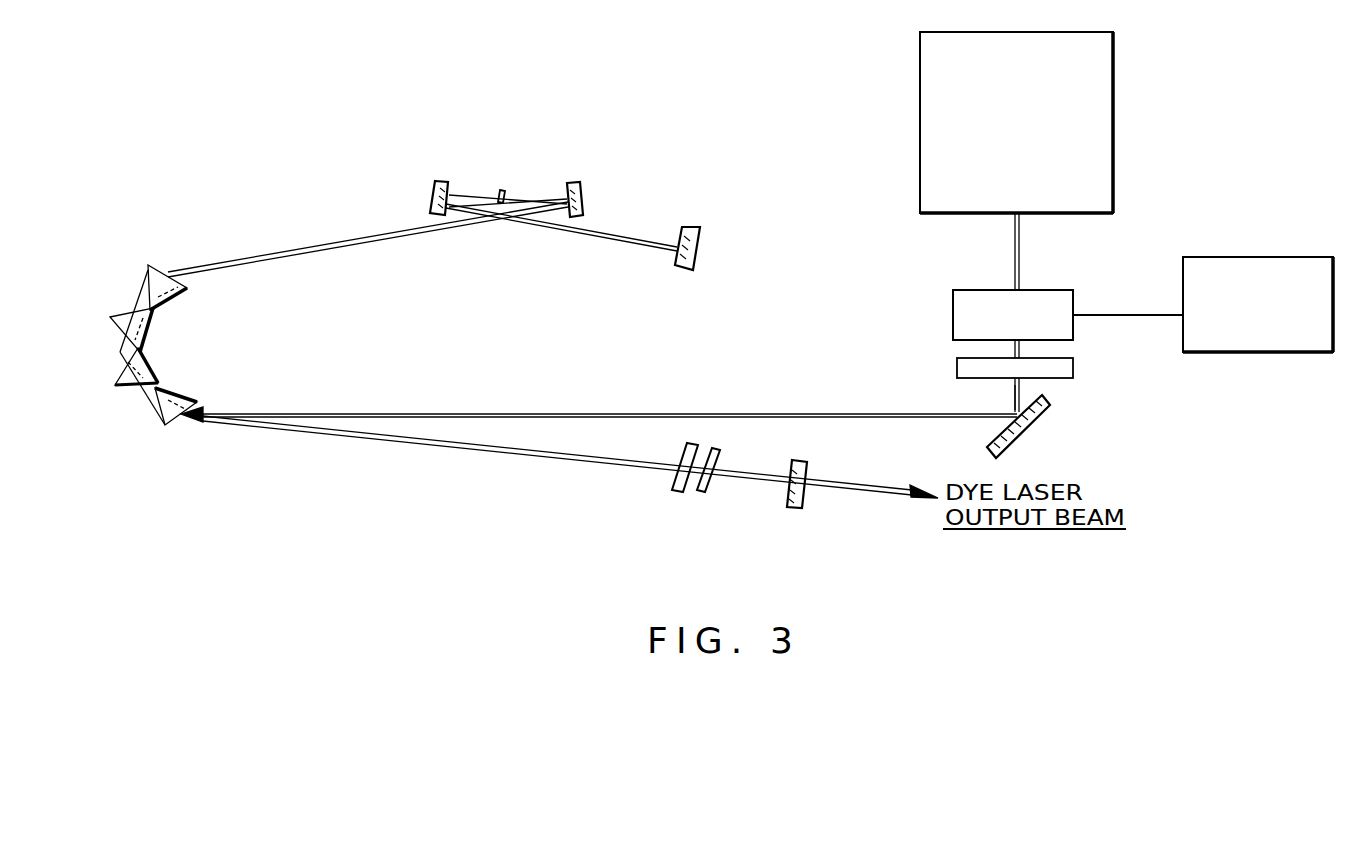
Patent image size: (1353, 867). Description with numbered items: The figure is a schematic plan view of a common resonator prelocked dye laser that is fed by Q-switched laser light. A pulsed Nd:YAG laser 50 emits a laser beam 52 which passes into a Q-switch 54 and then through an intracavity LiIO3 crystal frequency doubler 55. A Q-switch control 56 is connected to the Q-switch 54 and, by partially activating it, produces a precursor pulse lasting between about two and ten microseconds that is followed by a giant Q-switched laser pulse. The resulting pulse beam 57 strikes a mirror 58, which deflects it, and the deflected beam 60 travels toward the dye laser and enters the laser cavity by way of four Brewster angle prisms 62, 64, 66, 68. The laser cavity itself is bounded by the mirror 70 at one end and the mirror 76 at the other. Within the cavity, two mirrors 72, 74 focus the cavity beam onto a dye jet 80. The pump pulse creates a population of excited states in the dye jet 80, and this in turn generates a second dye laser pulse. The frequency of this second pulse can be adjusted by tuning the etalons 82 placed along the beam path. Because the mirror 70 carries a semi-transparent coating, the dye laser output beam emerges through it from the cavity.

The pulsed Nd:YAG laser 50 is at (1095, 165).
The laser beam 52 is at (1021, 252).
The Q-switch 54 is at (982, 298).
The intracavity LiIO3 crystal frequency doubler 55 is at (970, 368).
The Q-switch control 56 is at (1257, 345).
The pulse beam 57 is at (1013, 396).
The mirror 58 is at (1010, 440).
The deflected beam 60 is at (538, 413).
The Brewster angle prism 62 is at (168, 424).
The Brewster angle prism 64 is at (118, 382).
The Brewster angle prism 66 is at (120, 316).
The Brewster angle prism 68 is at (150, 268).
The mirror 70 is at (800, 508).
The mirror 72 is at (582, 188).
The mirror 74 is at (432, 198).
The mirror 76 is at (697, 227).
The dye jet 80 is at (503, 191).
The etalons 82 is at (702, 493).